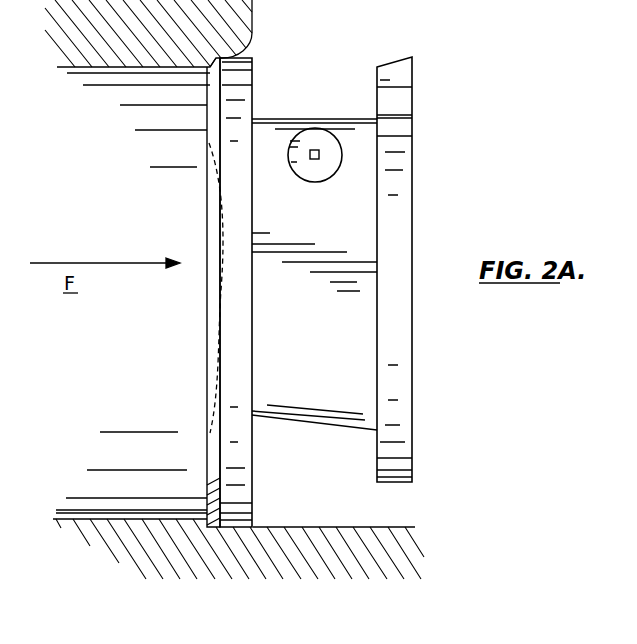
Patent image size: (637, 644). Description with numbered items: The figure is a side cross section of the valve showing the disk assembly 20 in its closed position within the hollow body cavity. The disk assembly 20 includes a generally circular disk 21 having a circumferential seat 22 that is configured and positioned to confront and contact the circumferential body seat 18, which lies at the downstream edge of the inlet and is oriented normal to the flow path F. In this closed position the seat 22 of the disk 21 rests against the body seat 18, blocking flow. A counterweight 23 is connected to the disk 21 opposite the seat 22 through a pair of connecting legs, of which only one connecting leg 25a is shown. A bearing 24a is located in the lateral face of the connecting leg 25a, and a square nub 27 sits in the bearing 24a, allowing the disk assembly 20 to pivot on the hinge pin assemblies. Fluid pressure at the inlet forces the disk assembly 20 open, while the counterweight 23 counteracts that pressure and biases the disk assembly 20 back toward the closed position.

The disk assembly 20 is at (430, 82).
The disk 21 is at (237, 389).
The body seat 18 is at (215, 527).
The circumferential seat 22 is at (213, 505).
The counterweight 23 is at (397, 231).
The bearing 24a is at (343, 152).
The square nub 27 is at (315, 150).
The connecting leg 25a is at (342, 403).